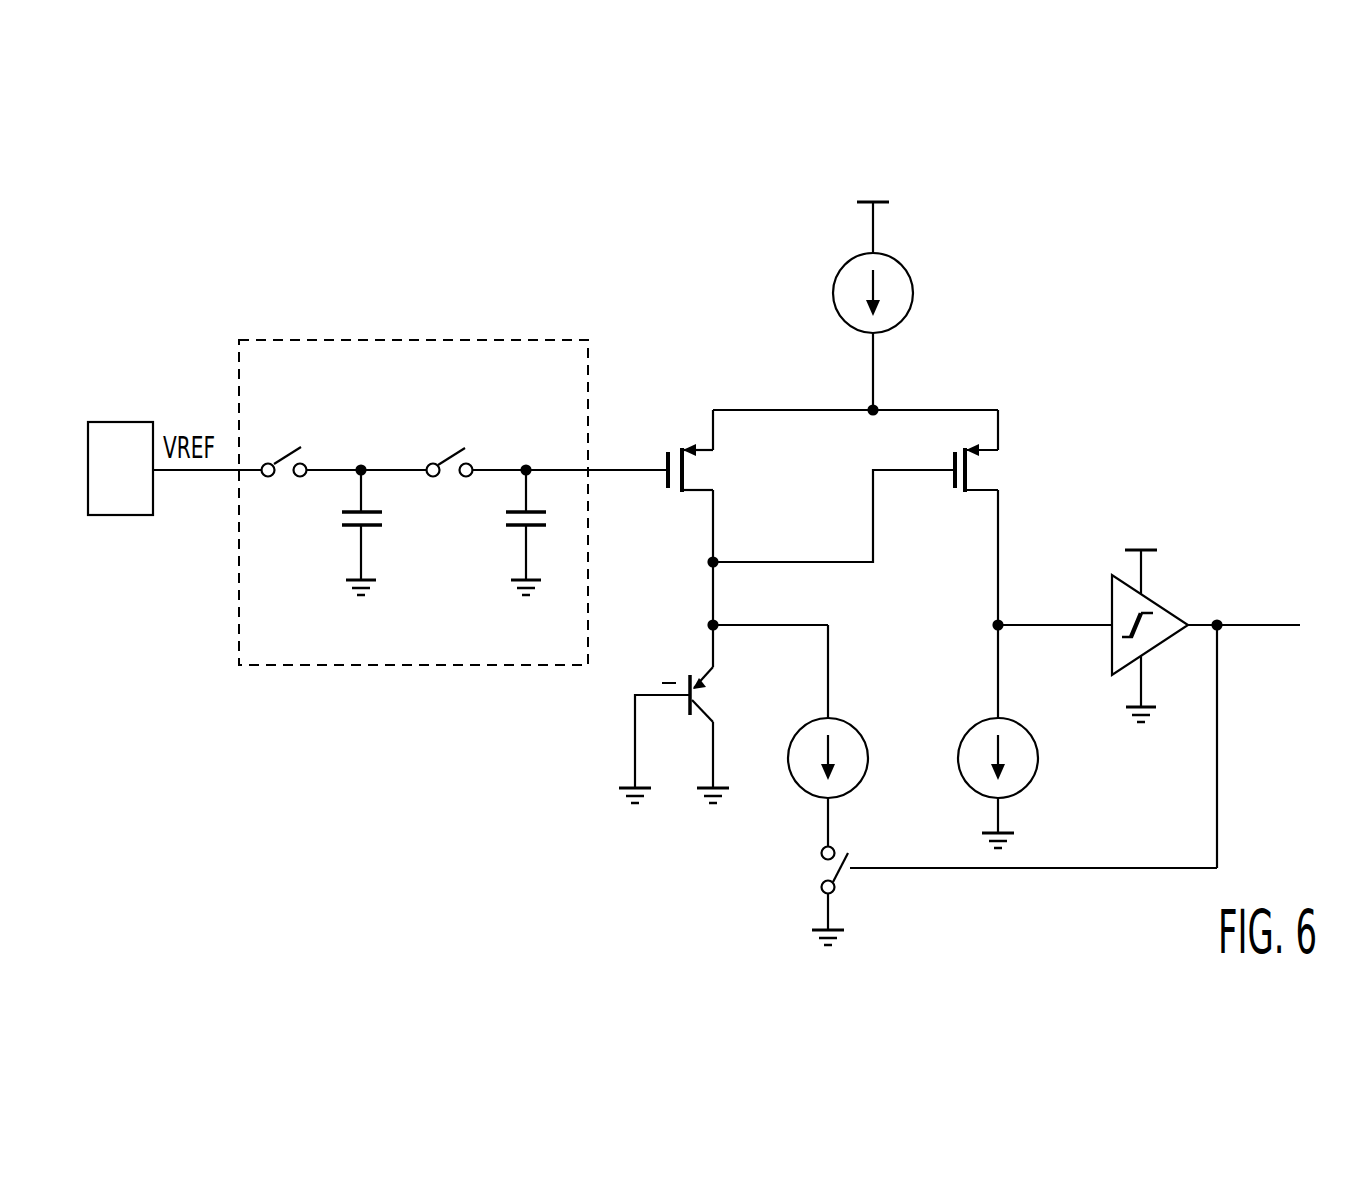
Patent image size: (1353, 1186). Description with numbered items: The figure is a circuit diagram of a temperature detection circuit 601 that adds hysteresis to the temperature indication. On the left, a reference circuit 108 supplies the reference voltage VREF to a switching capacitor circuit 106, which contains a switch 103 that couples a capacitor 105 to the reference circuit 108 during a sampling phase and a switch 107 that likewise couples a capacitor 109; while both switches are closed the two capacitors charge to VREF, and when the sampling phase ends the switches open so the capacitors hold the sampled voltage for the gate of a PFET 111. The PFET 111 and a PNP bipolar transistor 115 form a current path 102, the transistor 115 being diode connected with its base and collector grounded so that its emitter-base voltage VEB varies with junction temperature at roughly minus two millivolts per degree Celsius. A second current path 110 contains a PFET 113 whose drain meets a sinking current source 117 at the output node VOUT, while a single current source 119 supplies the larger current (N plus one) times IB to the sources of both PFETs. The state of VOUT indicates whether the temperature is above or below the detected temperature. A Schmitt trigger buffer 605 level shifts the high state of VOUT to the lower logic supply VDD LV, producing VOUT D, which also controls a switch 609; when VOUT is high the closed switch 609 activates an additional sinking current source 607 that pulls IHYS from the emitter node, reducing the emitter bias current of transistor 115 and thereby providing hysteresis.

The current path 102 is at (704, 372).
The switch 103 is at (283, 447).
The capacitor 105 is at (347, 525).
The switching capacitor circuit 106 is at (393, 340).
The switch 107 is at (450, 452).
The reference circuit 108 is at (139, 486).
The capacitor 109 is at (510, 527).
The current path 110 is at (1032, 360).
The PFET 111 is at (683, 477).
The PFET 113 is at (968, 470).
The PNP bipolar transistor 115 is at (705, 710).
The current source 117 is at (973, 727).
The current source 119 is at (835, 285).
The temperature detection circuit 601 is at (1207, 432).
The Schmitt trigger buffer 605 is at (1168, 610).
The sinking current source 607 is at (850, 718).
The switch 609 is at (840, 880).